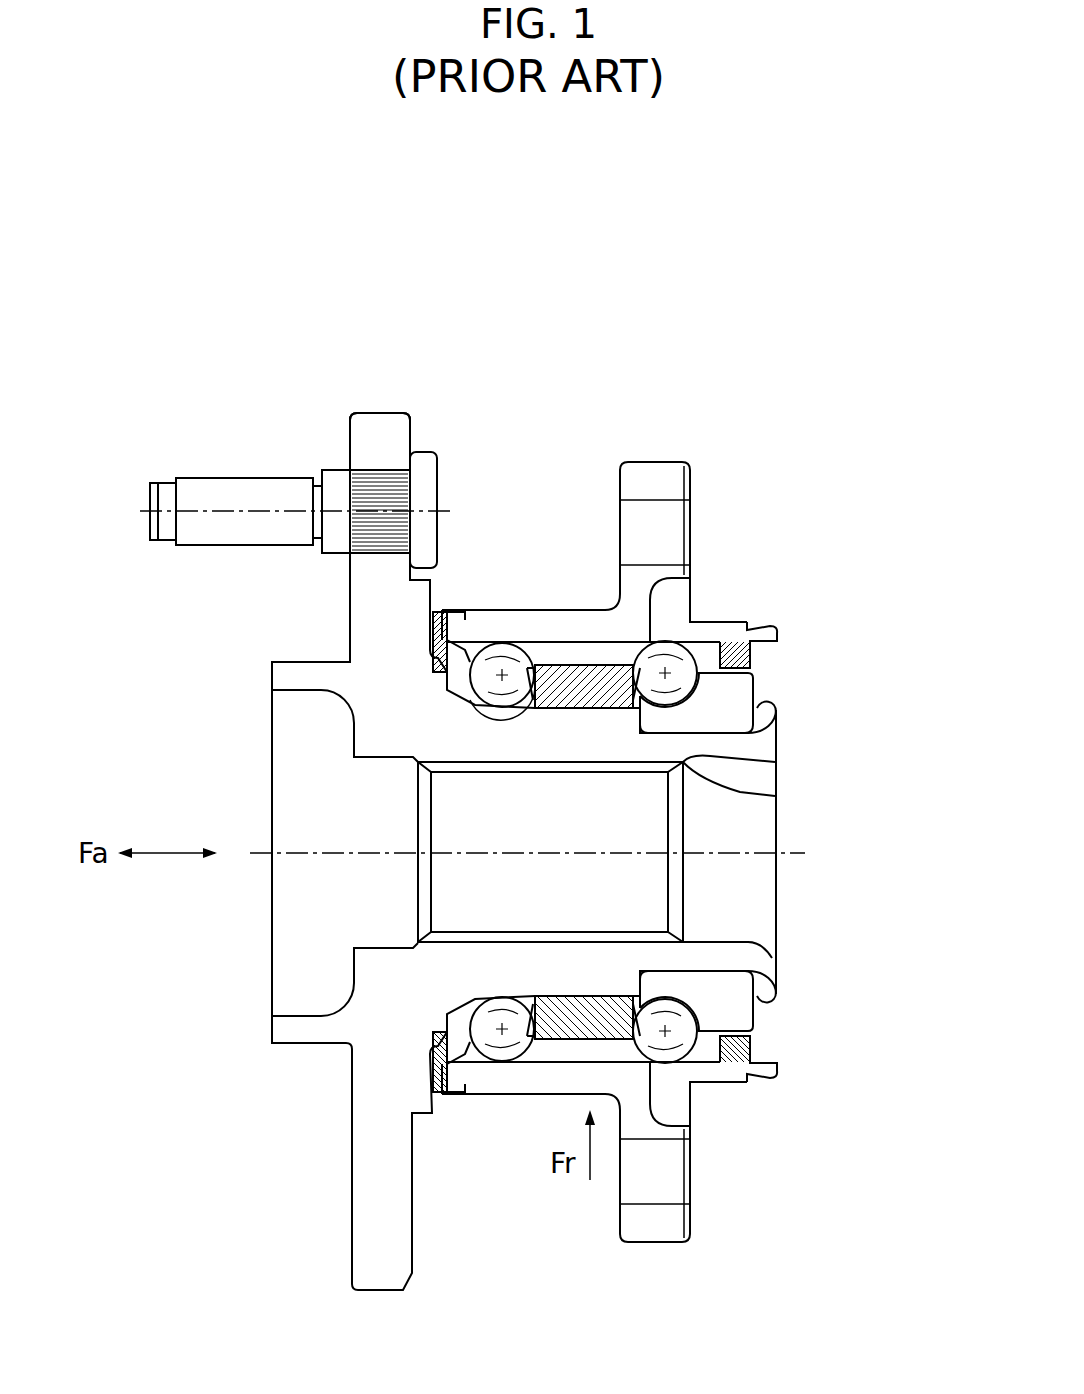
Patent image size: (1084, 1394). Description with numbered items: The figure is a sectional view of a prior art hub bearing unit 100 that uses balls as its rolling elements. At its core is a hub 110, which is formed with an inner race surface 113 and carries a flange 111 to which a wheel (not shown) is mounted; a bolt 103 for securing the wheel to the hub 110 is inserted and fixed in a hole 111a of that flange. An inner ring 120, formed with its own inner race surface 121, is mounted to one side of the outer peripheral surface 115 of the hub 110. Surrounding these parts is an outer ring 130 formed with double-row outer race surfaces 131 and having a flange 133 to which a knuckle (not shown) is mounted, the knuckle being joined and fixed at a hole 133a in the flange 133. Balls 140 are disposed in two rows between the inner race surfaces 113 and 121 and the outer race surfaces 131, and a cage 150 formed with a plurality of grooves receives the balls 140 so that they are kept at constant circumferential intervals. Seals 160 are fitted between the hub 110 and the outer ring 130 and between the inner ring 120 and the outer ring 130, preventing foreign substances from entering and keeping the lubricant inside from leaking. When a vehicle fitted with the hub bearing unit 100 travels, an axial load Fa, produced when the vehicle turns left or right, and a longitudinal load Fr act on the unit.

The hub bearing unit 100 is at (450, 300).
The bolt 103 is at (218, 495).
The hub 110 is at (290, 678).
The flange 111 is at (370, 430).
The hole 111a is at (388, 478).
The inner race surface 113 is at (478, 700).
The outer peripheral surface 115 is at (740, 790).
The inner ring 120 is at (740, 690).
The inner race surface 121 is at (770, 720).
The outer ring 130 is at (680, 603).
The outer race surface 131 is at (690, 578).
The flange 133 is at (657, 480).
The hole 133a is at (660, 524).
The balls 140 is at (700, 740).
The cage 150 is at (545, 660).
The seals 160 is at (748, 660).